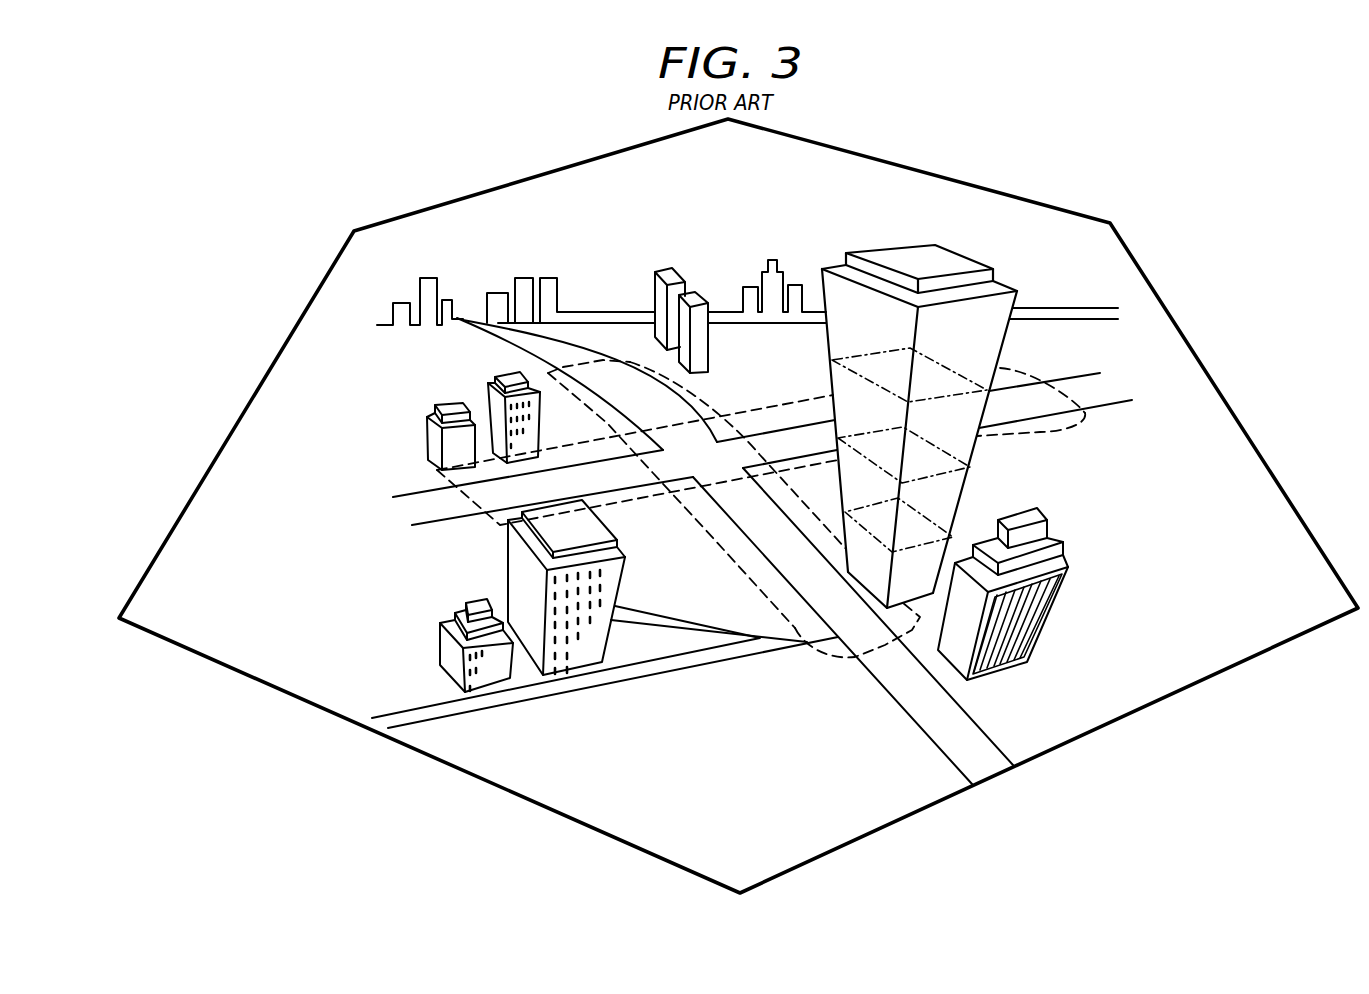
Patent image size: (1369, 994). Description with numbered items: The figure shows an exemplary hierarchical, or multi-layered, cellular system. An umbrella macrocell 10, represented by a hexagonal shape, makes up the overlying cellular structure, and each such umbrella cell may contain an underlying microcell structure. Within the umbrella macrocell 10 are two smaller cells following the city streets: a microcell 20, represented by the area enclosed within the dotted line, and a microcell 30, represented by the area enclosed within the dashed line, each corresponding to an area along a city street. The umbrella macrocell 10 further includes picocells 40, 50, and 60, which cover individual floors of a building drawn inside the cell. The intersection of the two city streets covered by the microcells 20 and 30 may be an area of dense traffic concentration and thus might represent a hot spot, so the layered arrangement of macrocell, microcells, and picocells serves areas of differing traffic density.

The umbrella macrocell 10 is at (457, 768).
The microcell 20 is at (618, 360).
The microcell 30 is at (457, 497).
The picocell 40 is at (990, 392).
The picocell 50 is at (965, 466).
The picocell 60 is at (897, 550).